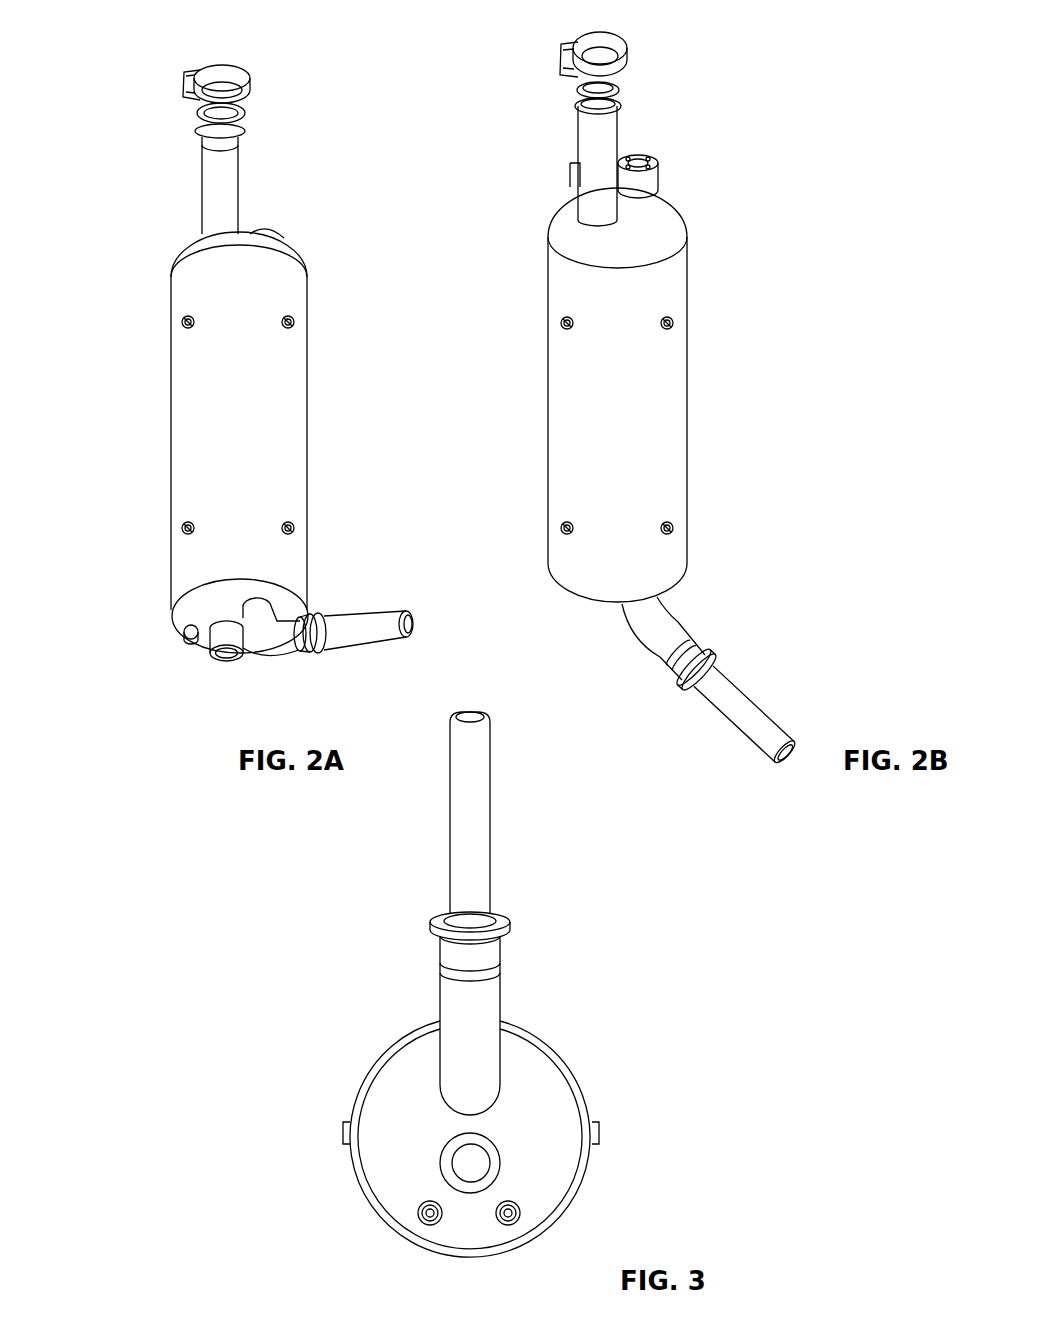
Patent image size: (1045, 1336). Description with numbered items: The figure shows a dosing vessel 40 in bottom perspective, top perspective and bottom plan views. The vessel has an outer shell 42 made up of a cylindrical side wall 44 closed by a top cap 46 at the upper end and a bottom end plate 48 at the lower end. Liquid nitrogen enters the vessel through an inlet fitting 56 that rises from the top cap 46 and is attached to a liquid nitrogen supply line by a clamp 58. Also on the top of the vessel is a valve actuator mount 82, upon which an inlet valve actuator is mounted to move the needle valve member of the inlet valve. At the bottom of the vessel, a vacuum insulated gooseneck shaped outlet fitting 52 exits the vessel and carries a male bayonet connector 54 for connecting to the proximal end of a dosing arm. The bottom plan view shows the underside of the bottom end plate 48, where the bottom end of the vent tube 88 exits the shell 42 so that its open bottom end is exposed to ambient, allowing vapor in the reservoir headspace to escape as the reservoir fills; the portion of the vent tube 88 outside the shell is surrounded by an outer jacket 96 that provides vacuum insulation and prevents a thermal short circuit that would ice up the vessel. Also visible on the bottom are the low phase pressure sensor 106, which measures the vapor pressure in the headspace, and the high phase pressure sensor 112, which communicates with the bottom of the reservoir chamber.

In FIG. 2A, the dosing vessel 40 is at (66, 204).
In FIG. 2B, the dosing vessel 40 is at (768, 208).
In FIG. 3, the dosing vessel 40 is at (527, 719).
In FIG. 2A, the outer shell 42 is at (134, 431).
In FIG. 2B, the outer shell 42 is at (519, 431).
In FIG. 2A, the cylindrical side wall 44 is at (293, 435).
In FIG. 2B, the cylindrical side wall 44 is at (676, 388).
In FIG. 3, the cylindrical side wall 44 is at (591, 1104).
In FIG. 2A, the top cap 46 is at (184, 258).
In FIG. 2B, the top cap 46 is at (562, 210).
In FIG. 2A, the bottom end plate 48 is at (213, 602).
In FIG. 3, the bottom end plate 48 is at (377, 1091).
In FIG. 2A, the outlet fitting 52 is at (283, 655).
In FIG. 2B, the outlet fitting 52 is at (668, 620).
In FIG. 3, the outlet fitting 52 is at (502, 994).
In FIG. 2A, the male bayonet connector 54 is at (380, 612).
In FIG. 2B, the male bayonet connector 54 is at (767, 723).
In FIG. 3, the male bayonet connector 54 is at (490, 828).
In FIG. 2A, the inlet fitting 56 is at (240, 176).
In FIG. 2B, the inlet fitting 56 is at (617, 135).
In FIG. 2A, the clamp 58 is at (240, 80).
In FIG. 2B, the clamp 58 is at (627, 57).
In FIG. 2B, the valve actuator mount 82 is at (647, 152).
In FIG. 3, the vent tube 88 is at (473, 1183).
In FIG. 3, the outer jacket 96 is at (500, 1160).
In FIG. 2A, the low phase pressure sensor 106 is at (183, 637).
In FIG. 3, the low phase pressure sensor 106 is at (415, 1213).
In FIG. 3, the high phase pressure sensor 112 is at (518, 1216).